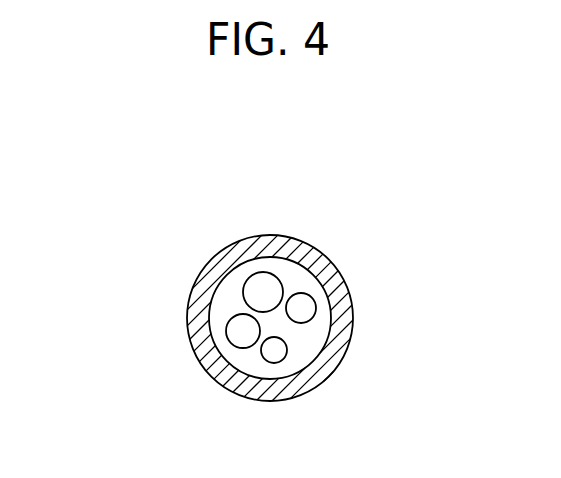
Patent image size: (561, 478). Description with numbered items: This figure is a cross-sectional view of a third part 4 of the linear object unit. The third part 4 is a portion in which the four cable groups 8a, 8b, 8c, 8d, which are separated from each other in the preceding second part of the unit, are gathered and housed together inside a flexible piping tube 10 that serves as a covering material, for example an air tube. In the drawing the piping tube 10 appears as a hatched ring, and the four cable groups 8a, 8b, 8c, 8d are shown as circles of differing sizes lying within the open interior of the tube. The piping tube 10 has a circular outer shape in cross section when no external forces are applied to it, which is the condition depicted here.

The third part 4 is at (362, 269).
The piping tube 10 is at (262, 234).
The cable group 8a is at (248, 278).
The cable group 8b is at (301, 308).
The cable group 8c is at (243, 331).
The cable group 8d is at (274, 350).